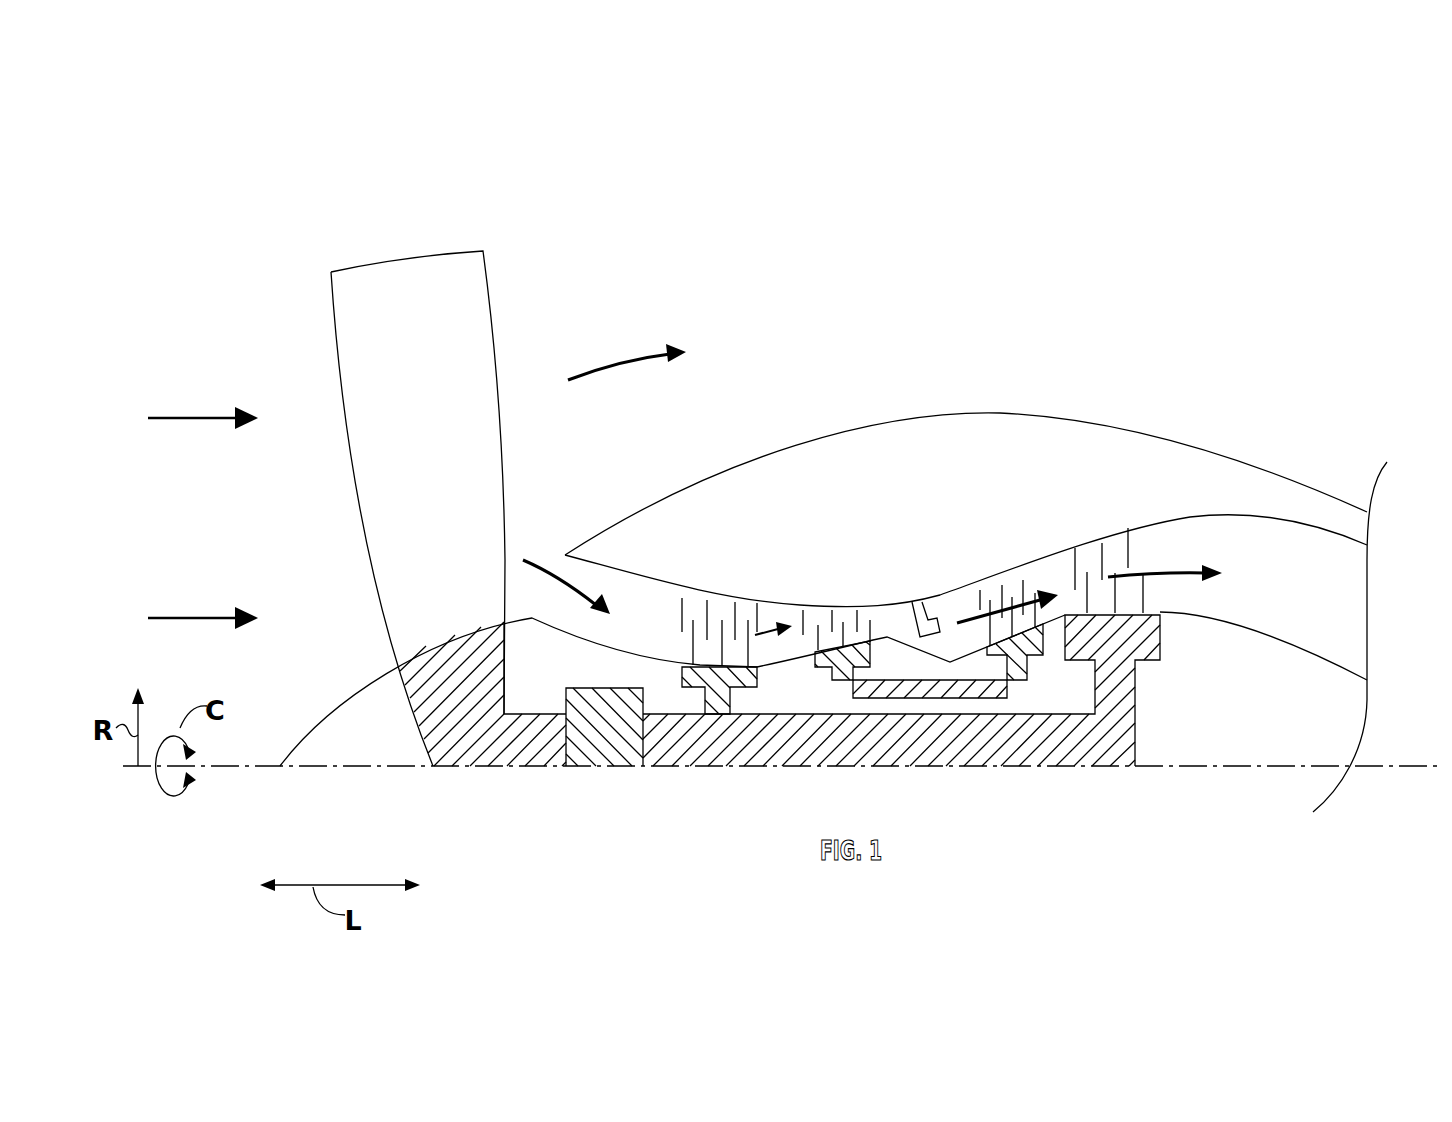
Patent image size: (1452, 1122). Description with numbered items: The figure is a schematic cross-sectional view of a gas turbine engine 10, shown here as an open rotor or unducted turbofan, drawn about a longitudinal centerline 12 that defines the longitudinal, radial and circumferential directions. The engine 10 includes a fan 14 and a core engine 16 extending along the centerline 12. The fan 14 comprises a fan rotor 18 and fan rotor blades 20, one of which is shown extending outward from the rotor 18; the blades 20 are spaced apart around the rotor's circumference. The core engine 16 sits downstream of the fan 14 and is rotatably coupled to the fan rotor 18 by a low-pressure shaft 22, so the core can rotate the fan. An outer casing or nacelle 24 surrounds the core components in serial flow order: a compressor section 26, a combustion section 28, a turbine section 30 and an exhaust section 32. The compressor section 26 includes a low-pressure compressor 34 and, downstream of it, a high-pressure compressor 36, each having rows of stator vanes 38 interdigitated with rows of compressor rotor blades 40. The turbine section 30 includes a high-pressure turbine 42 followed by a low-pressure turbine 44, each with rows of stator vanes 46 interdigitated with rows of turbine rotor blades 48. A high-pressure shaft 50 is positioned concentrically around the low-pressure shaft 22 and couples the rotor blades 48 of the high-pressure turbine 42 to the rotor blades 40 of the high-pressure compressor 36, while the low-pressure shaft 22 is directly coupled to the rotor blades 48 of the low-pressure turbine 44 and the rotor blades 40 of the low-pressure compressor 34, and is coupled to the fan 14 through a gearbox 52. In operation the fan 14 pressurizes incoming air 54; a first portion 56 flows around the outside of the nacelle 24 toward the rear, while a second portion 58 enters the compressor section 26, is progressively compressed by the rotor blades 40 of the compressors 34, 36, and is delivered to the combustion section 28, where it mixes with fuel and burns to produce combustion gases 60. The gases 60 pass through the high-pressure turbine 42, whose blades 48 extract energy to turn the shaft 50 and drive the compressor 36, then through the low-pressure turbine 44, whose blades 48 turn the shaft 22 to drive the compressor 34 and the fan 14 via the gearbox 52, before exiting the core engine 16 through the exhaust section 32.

The gas turbine engine 10 is at (291, 102).
The longitudinal centerline 12 is at (278, 770).
The fan 14 is at (333, 195).
The core engine 16 is at (967, 375).
The fan rotor 18 is at (413, 727).
The fan rotor blades 20 is at (332, 298).
The low-pressure shaft 22 is at (797, 745).
The outer casing 24 is at (765, 447).
The compressor section 26 is at (768, 558).
The combustion section 28 is at (913, 568).
The turbine section 30 is at (1030, 528).
The exhaust section 32 is at (1273, 637).
The low-pressure compressor 34 is at (757, 609).
The high-pressure compressor 36 is at (843, 576).
The stator vanes 38 is at (677, 612).
The compressor rotor blades 40 is at (690, 647).
The high-pressure turbine 42 is at (1086, 578).
The low-pressure turbine 44 is at (1120, 508).
The stator vanes 46 is at (973, 607).
The turbine rotor blades 48 is at (1042, 620).
The high-pressure shaft 50 is at (987, 700).
The gearbox 52 is at (610, 745).
The incoming air 54 is at (185, 420).
The first portion of pressurized air 56 is at (612, 360).
The second portion of air 58 is at (541, 578).
The combustion gases 60 is at (1048, 588).